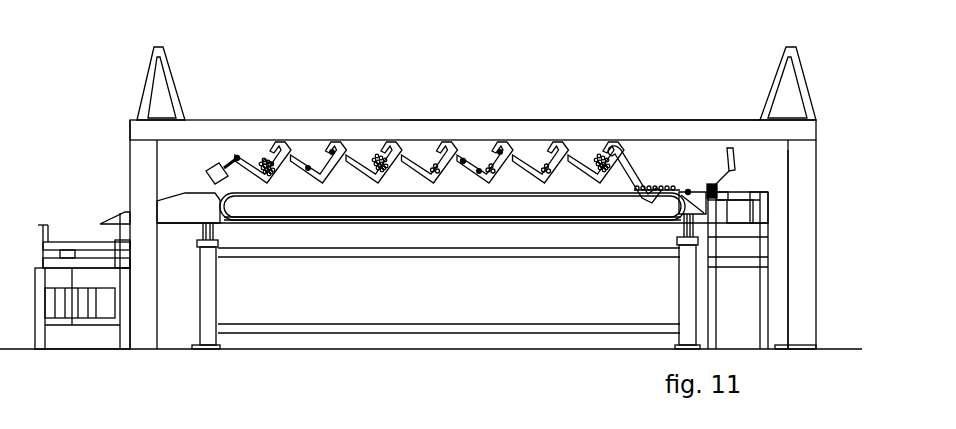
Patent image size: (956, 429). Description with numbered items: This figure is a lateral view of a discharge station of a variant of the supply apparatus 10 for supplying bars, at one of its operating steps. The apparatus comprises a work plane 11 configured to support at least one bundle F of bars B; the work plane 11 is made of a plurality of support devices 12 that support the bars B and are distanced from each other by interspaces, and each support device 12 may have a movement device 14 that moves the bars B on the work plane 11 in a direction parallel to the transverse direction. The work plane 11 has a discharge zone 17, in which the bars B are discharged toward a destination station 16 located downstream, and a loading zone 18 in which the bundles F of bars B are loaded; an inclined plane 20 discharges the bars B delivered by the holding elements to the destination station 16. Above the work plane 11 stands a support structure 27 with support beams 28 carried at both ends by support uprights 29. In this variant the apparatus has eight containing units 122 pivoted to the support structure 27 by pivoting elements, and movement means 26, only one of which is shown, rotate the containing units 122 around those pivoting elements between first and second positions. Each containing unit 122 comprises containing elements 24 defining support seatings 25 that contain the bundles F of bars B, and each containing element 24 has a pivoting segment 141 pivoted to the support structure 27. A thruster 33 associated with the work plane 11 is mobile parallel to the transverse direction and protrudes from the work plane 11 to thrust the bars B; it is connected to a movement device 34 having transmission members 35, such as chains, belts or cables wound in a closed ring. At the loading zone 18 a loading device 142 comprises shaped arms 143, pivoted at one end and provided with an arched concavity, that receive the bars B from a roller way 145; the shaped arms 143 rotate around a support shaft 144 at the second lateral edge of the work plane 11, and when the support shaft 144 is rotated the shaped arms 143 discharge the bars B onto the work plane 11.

The supply apparatus 10 is at (831, 56).
The work plane 11 is at (357, 188).
The support device 12 is at (361, 281).
The movement device 14 is at (706, 196).
The destination station 16 is at (93, 340).
The discharge zone 17 is at (182, 187).
The loading zone 18 is at (679, 180).
The inclined plane 20 is at (115, 218).
The containing element 24 is at (504, 149).
The support seating 25 is at (330, 150).
The movement means 26 is at (208, 164).
The support structure 27 is at (814, 130).
The support beam 28 is at (737, 130).
The support upright 29 is at (802, 292).
The thruster 33 is at (686, 210).
The movement device 34 is at (531, 226).
The transmission member 35 is at (558, 221).
The containing unit 122 is at (247, 146).
The pivoting segment 141 is at (308, 170).
The loading device 142 is at (738, 158).
The shaped arm 143 is at (711, 186).
The support shaft 144 is at (237, 156).
The roller way 145 is at (737, 187).
The bar B is at (378, 156).
The bundle of bars F is at (267, 146).